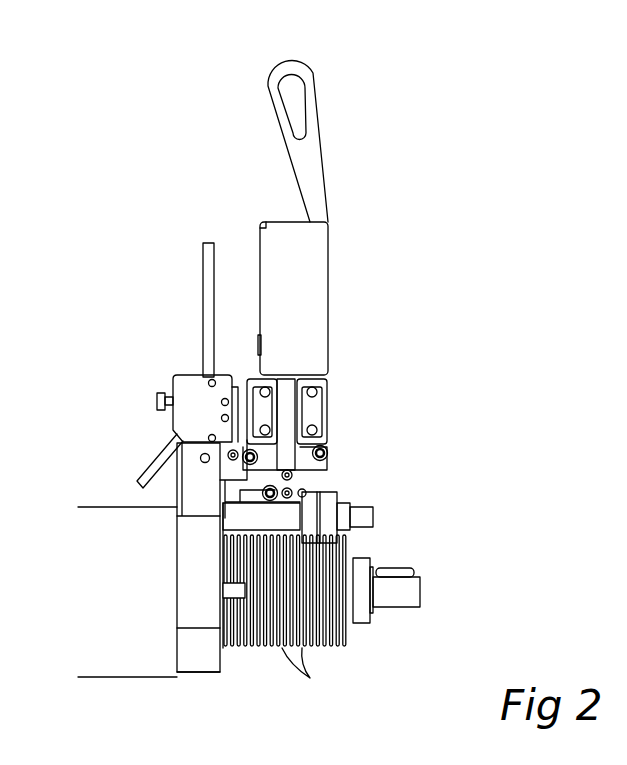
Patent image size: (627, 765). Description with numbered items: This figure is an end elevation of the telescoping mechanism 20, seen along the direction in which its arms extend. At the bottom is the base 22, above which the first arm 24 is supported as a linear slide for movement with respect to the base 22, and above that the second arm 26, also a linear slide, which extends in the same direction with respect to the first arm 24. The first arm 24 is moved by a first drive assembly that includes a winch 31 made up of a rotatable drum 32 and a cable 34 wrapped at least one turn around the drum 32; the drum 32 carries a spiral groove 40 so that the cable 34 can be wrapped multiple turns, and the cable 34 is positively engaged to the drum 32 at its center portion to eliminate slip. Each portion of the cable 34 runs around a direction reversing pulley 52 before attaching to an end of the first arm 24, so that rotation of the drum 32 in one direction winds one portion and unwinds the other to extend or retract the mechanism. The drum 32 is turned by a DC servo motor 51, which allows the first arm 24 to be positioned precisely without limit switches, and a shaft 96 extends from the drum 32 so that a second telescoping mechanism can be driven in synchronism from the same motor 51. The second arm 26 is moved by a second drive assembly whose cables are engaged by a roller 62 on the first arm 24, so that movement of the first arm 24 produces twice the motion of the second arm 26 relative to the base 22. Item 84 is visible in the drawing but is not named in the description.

The telescoping mechanism 20 is at (513, 53).
The handle 84 is at (265, 88).
The second arm 26 is at (330, 318).
The first arm 24 is at (285, 420).
The roller 62 is at (310, 475).
The direction reversing pulley 52 is at (338, 500).
The DC servo motor 51 is at (130, 522).
The winch 31 is at (358, 557).
The shaft 96 is at (418, 575).
The rotatable drum 32 is at (350, 640).
The spiral groove 40 is at (242, 650).
The cable 34 is at (317, 668).
The base 22 is at (212, 673).